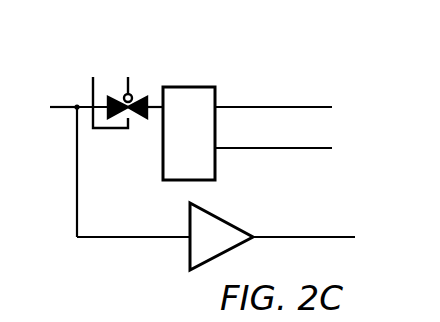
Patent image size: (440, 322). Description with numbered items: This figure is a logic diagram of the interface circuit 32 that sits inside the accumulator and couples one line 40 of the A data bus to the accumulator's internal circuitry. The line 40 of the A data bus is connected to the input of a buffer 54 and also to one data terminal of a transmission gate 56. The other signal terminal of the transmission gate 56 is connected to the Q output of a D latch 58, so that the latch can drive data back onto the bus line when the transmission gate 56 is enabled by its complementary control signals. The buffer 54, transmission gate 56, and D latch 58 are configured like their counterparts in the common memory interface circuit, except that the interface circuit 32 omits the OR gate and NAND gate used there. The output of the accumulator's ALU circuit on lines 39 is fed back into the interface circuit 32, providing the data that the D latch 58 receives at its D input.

The interface circuit 32 is at (347, 62).
The lines 39 is at (273, 106).
The line of the A data bus 40 is at (62, 107).
The buffer 54 is at (189, 220).
The transmission gate 56 is at (142, 120).
The D latch 58 is at (188, 87).